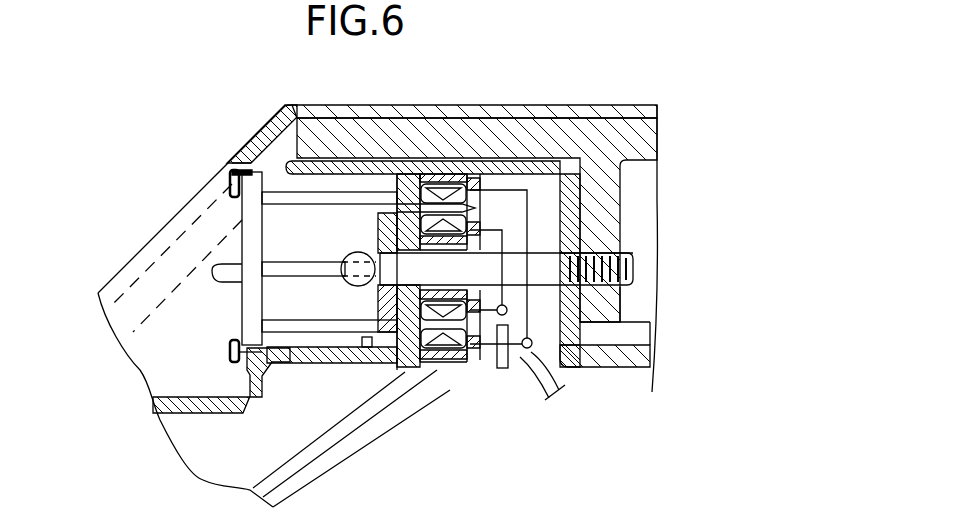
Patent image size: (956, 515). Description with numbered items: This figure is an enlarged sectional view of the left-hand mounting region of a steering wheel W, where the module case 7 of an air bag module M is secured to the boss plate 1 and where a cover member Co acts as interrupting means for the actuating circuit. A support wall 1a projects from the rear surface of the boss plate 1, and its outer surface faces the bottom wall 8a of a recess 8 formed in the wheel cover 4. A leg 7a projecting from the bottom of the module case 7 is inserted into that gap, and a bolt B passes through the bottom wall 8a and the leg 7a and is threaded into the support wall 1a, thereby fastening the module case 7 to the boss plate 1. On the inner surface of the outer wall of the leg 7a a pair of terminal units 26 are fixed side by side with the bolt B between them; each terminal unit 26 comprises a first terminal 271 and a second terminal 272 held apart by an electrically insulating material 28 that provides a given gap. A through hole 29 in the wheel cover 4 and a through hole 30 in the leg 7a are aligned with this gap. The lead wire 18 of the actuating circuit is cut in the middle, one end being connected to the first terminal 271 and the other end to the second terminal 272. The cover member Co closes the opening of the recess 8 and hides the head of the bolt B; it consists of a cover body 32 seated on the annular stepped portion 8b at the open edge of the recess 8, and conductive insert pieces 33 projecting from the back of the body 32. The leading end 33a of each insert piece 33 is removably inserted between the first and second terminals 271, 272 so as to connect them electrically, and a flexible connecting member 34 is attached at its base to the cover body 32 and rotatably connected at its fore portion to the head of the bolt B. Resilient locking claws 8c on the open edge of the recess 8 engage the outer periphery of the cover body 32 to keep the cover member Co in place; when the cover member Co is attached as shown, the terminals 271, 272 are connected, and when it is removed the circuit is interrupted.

The boss plate 1 is at (658, 139).
The support wall 1a is at (616, 185).
The wheel cover 4 is at (545, 106).
The module case 7 is at (333, 420).
The leg 7a is at (408, 160).
The recess 8 is at (336, 348).
The bottom wall 8a is at (378, 228).
The stepped portion 8b is at (262, 370).
The resilient locking claw 8c is at (229, 183).
The lead wire 18 is at (522, 370).
The terminal unit 26 is at (437, 173).
The first terminal 271 is at (440, 246).
The second terminal 272 is at (458, 185).
The electrically insulating material 28 is at (482, 180).
The through hole 29 is at (366, 348).
The through hole 30 is at (414, 366).
The cover body 32 is at (242, 313).
The insert piece 33 is at (304, 204).
The leading end 33a is at (475, 208).
The flexible connecting member 34 is at (292, 276).
The bolt B is at (630, 267).
The cover member Co is at (212, 269).
The air bag module M is at (278, 465).
The steering wheel W is at (238, 135).